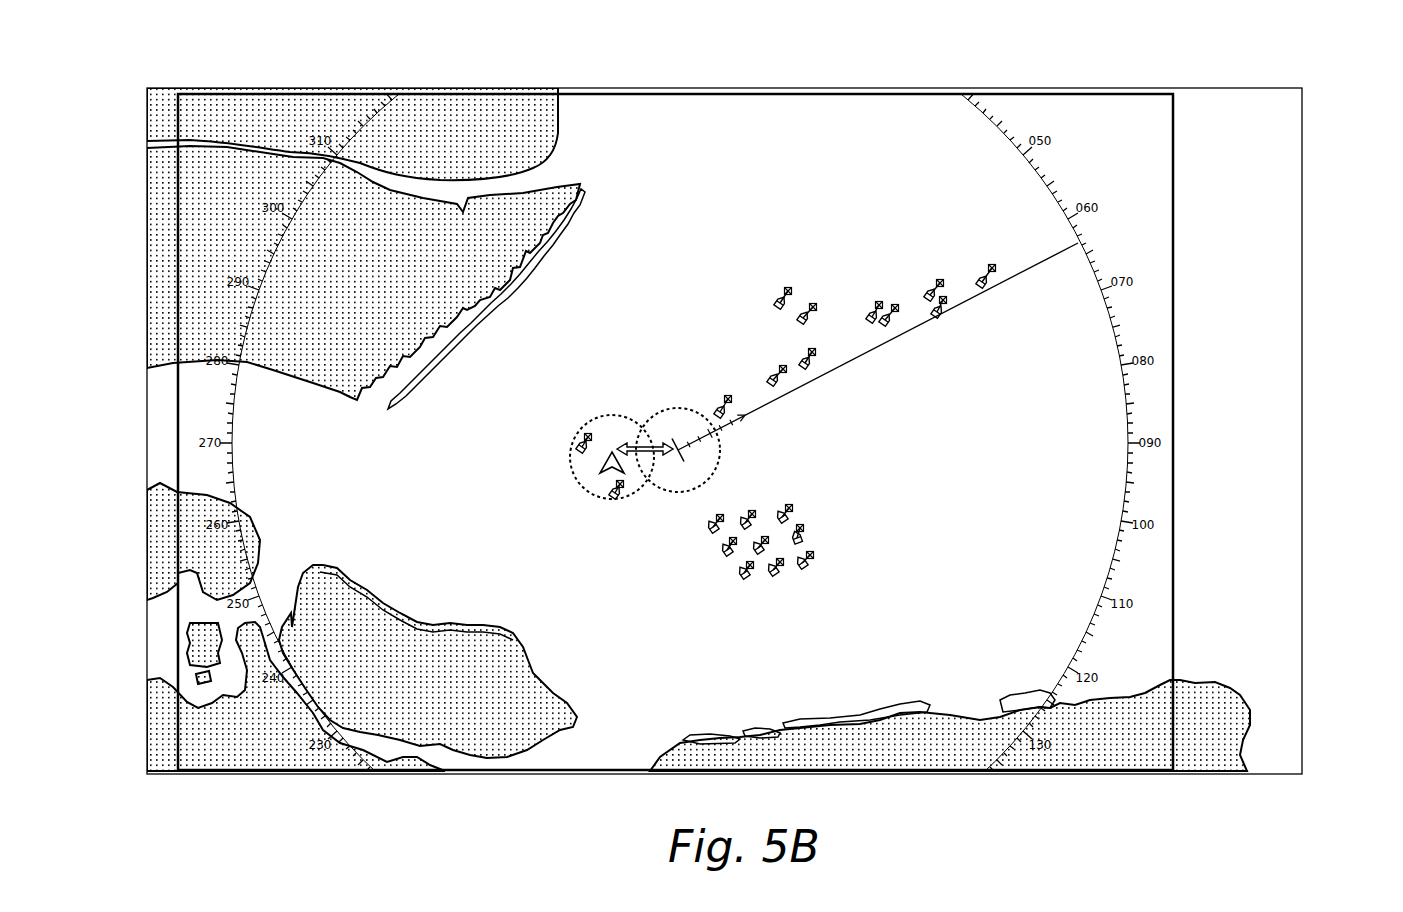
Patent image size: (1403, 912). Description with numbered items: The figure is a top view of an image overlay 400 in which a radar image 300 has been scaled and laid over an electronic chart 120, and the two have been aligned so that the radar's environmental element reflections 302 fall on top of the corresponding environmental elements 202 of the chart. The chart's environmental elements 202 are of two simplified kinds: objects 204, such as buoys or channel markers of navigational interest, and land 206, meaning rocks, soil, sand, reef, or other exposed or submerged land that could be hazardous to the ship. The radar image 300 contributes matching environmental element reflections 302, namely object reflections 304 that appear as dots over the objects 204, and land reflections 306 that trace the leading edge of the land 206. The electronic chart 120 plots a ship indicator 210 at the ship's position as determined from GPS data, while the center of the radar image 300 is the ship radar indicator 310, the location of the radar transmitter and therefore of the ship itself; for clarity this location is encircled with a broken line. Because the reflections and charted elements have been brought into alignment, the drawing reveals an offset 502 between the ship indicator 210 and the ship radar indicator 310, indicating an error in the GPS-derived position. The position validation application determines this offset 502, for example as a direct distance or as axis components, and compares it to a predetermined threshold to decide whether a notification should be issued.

The image overlay 400 is at (1185, 45).
The radar image 300 is at (1160, 132).
The electronic chart 120 is at (1292, 179).
The environmental element reflections 302 is at (879, 225).
The environmental elements 202 is at (903, 240).
The objects 204 is at (785, 290).
The object reflections 304 is at (791, 295).
The land reflections 306 is at (455, 315).
The land 206 is at (376, 354).
The offset 502 is at (640, 447).
The ship indicator 210 is at (598, 458).
The ship radar indicator 310 is at (679, 458).